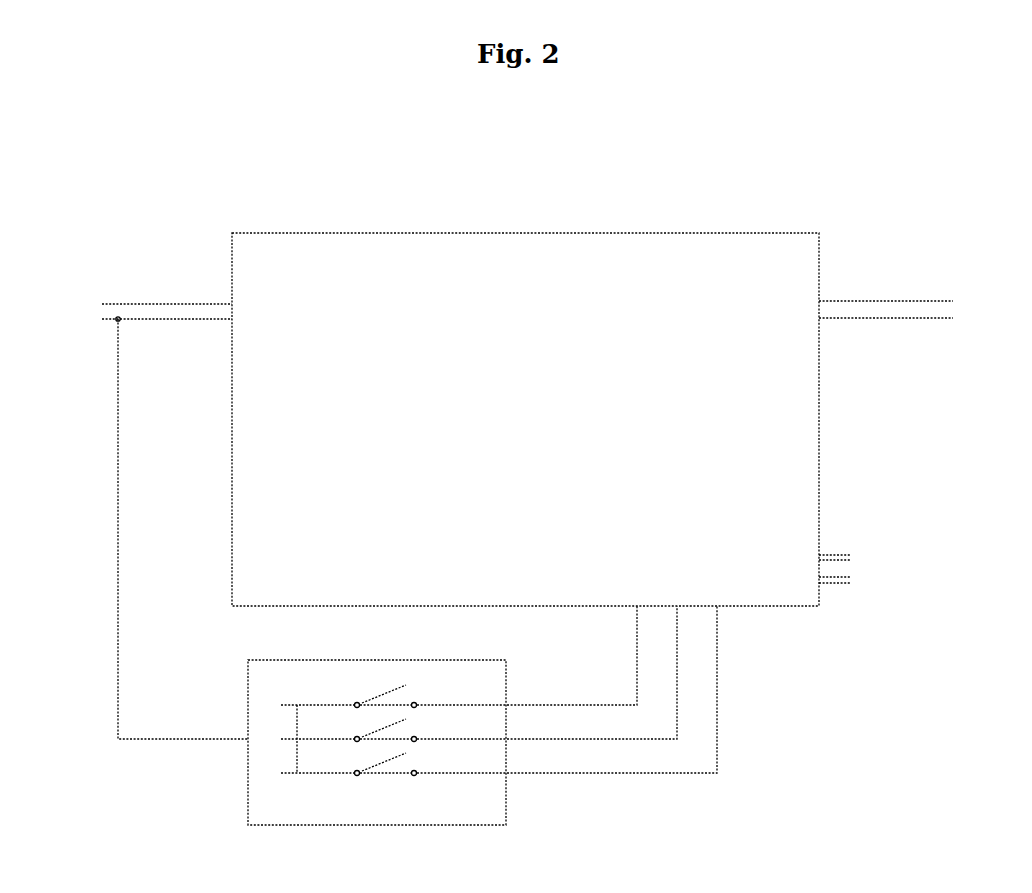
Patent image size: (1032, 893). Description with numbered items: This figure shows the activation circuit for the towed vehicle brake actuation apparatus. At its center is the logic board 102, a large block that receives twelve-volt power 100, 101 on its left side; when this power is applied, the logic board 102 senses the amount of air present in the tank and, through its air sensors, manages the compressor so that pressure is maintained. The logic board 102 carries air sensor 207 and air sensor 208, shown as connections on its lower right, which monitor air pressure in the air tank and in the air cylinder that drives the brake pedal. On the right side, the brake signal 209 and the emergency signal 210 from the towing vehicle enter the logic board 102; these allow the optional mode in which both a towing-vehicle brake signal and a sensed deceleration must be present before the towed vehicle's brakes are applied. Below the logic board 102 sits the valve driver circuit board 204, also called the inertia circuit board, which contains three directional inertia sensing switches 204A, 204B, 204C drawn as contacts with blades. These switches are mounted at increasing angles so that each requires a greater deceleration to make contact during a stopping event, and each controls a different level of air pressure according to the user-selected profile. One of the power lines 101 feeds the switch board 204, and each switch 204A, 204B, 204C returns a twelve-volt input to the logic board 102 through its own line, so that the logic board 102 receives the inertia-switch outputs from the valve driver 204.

The 12 v power 100 is at (101, 302).
The 12 v power 101 is at (101, 317).
The logic board 102 is at (231, 233).
The valve driver circuit board 204 is at (268, 658).
The directional inertia sensing switch 204A is at (485, 693).
The directional inertia sensing switch 204B is at (465, 676).
The directional inertia sensing switch 204C is at (445, 659).
The air sensor 207 is at (815, 556).
The air sensor 208 is at (815, 580).
The brake signal 209 is at (956, 300).
The emergency signal 210 is at (956, 316).